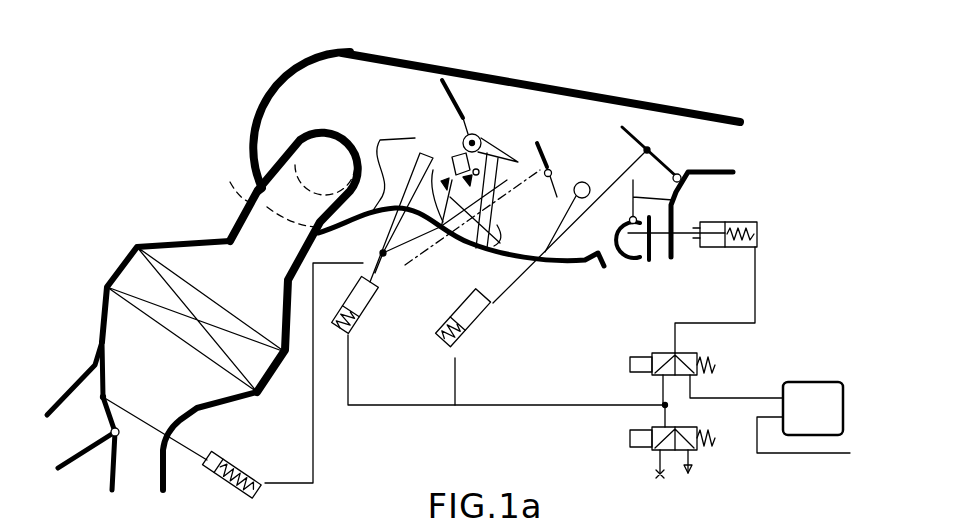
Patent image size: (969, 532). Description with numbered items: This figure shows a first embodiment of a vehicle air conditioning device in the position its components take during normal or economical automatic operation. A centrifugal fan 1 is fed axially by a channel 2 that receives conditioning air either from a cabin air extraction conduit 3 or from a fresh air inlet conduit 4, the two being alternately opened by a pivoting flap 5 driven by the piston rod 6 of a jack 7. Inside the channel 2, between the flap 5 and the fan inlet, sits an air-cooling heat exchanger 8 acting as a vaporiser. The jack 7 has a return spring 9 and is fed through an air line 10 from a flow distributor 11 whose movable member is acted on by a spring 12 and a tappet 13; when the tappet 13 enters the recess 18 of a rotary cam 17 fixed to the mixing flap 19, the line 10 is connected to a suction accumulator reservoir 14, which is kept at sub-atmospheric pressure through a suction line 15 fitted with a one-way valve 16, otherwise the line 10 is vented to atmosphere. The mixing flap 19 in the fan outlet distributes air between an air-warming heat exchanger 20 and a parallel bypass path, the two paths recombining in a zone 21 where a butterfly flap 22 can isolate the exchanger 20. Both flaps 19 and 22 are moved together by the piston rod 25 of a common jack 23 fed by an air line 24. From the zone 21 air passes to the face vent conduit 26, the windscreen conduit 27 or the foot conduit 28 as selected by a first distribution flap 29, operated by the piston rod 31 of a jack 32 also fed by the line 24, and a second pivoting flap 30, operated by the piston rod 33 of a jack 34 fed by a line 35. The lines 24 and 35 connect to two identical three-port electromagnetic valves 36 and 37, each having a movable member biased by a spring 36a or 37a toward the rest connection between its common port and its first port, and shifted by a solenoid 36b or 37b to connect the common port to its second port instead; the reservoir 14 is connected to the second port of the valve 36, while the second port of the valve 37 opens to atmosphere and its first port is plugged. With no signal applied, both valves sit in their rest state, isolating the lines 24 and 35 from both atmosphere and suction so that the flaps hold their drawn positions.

The fan 1 is at (257, 126).
The channel 2 is at (255, 196).
The recycling or cabin air extraction conduit 3 is at (50, 415).
The fresh air inlet conduit 4 is at (166, 467).
The pivoting flap 5 is at (105, 350).
The piston rod 6 is at (195, 447).
The jack 7 is at (238, 490).
The air-cooling heat exchanger 8 is at (180, 287).
The spring 9 is at (262, 473).
The air line 10 is at (313, 433).
The flow distributor 11 is at (383, 268).
The spring 12 is at (446, 229).
The tappet 13 is at (447, 140).
The suction accumulator reservoir 14 is at (812, 382).
The suction line 15 is at (787, 457).
The one-way valve 16 is at (783, 420).
The rotary cam 17 is at (480, 130).
The recess 18 is at (465, 127).
The mixing flap 19 is at (461, 72).
The air-warming heat exchanger 20 is at (469, 213).
The zone 21 is at (607, 122).
The butterfly flap 22 is at (545, 150).
The jack 23 is at (368, 300).
The air line 24 is at (349, 357).
The piston rod 25 is at (392, 263).
The conduit 26 is at (735, 113).
The conduit 27 is at (671, 245).
The conduit 28 is at (601, 266).
The distribution flap 29 is at (640, 133).
The pivoting flap 30 is at (683, 198).
The piston rod 31 is at (522, 272).
The jack 32 is at (495, 330).
The piston rod 33 is at (690, 237).
The jack 34 is at (727, 221).
The air line 35 is at (756, 265).
The electromagnetic valve 36 is at (688, 353).
The spring 36a is at (712, 366).
The solenoid 36b is at (638, 357).
The electromagnetic valve 37 is at (660, 429).
The spring 37a is at (714, 440).
The solenoid 37b is at (630, 440).